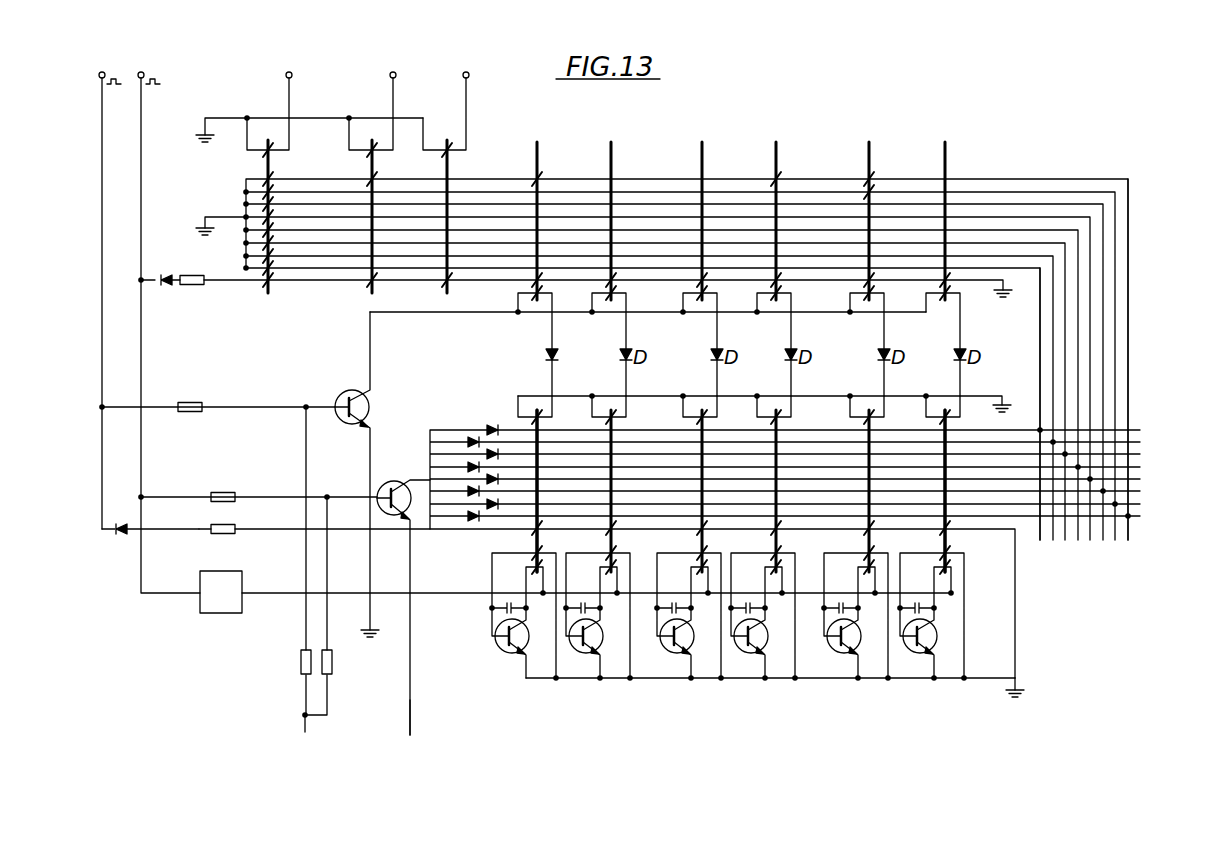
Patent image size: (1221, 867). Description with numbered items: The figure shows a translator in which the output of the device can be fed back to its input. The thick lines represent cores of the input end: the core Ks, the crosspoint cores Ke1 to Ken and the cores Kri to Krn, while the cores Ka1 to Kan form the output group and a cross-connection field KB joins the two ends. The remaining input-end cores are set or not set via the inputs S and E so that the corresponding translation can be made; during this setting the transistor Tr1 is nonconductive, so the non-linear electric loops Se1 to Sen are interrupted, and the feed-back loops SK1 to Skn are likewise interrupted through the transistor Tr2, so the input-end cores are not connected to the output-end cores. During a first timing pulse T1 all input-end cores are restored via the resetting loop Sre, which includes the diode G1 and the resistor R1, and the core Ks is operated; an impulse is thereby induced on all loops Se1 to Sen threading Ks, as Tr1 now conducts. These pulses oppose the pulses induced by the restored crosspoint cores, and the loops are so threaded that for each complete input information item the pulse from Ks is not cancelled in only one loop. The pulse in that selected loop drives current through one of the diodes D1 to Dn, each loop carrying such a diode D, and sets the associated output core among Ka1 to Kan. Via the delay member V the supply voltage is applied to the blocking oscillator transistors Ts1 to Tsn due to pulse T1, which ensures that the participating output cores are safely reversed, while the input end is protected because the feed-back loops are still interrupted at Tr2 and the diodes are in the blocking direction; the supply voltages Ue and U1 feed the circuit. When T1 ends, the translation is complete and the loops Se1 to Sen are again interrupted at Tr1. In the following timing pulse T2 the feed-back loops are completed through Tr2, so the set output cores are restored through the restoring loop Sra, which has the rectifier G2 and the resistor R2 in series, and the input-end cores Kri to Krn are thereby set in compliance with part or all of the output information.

The first timing pulse T1 is at (167, 319).
The second timing pulse T2 is at (107, 287).
The input S is at (271, 99).
The input E is at (461, 73).
The core of the input end Kri is at (548, 342).
The core of the input end Krn is at (948, 342).
The diode G1 is at (159, 292).
The resistor R1 is at (596, 293).
The core Ks is at (265, 229).
The resetting loop Sre is at (662, 359).
The core of the input end Ke1 is at (391, 226).
The core of the input end Ken is at (465, 226).
The diode D is at (546, 344).
The non-linear electric loop Se1 is at (1024, 404).
The non-linear electric loop Sen is at (1156, 359).
The feed-back loop SK1 is at (558, 394).
The feed-back loop Skn is at (967, 393).
The transistor Tr2 is at (350, 471).
The transistor Tr1 is at (403, 593).
The diode D1 is at (489, 418).
The diode Dn is at (488, 525).
The restoring loop Sra is at (470, 536).
The core of the output group Ka1 is at (512, 491).
The core of the output group Kan is at (917, 491).
The cross-connection matrix KB is at (1108, 473).
The rectifier G2 is at (149, 542).
The resistor R2 is at (607, 602).
The delay member V is at (221, 592).
The blocking oscillator transistor Ts1 is at (519, 613).
The blocking oscillator transistor Tsn is at (931, 613).
The supply voltage Ue is at (326, 575).
The supply voltage U1 is at (432, 721).